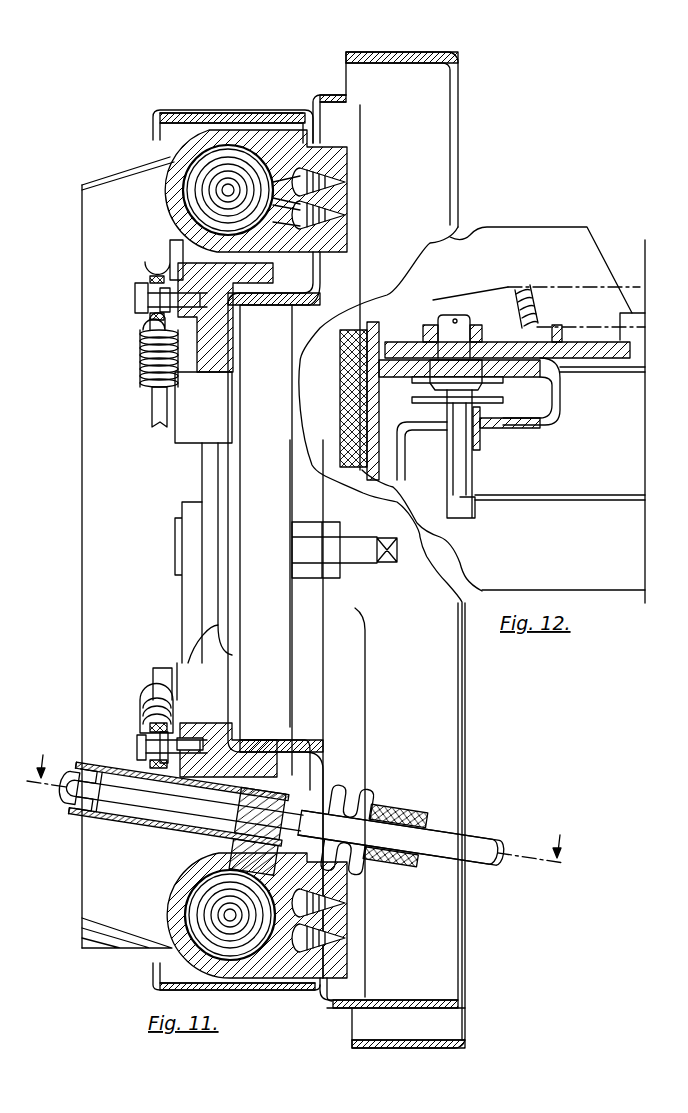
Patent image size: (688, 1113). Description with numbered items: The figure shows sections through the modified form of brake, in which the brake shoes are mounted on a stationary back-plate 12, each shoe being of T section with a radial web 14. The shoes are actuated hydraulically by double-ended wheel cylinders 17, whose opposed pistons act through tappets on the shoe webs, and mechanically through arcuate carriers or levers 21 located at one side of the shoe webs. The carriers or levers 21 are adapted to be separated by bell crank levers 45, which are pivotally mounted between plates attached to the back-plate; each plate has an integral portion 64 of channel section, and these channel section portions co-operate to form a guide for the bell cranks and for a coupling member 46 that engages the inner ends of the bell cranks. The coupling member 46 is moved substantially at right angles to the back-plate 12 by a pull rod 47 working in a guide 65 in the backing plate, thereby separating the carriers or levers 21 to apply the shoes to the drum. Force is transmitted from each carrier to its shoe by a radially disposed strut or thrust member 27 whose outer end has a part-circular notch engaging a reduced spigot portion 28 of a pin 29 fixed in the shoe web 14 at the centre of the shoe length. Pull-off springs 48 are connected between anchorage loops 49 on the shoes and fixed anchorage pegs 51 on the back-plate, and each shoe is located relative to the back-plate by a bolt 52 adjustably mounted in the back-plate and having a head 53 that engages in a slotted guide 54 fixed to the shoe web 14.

In FIG. 11, the back-plate 12 is at (432, 163).
In FIG. 11, the double-ended wheel cylinder 17 is at (225, 135).
In FIG. 11, the anchorage peg 51 is at (160, 300).
In FIG. 11, the pull-off spring 48 is at (140, 362).
In FIG. 12, the pull-off spring 48 is at (508, 292).
In FIG. 11, the radial web 14 is at (304, 793).
In FIG. 12, the radial web 14 is at (398, 368).
In FIG. 11, the coupling member 46 is at (80, 808).
In FIG. 11, the bell crank lever 45 is at (90, 822).
In FIG. 11, the channel section portion 64 is at (147, 803).
In FIG. 11, the guide 65 is at (273, 802).
In FIG. 11, the pull rod 47 is at (438, 840).
In FIG. 12, the anchorage loop 49 is at (405, 308).
In FIG. 12, the reduced spigot portion 28 is at (450, 333).
In FIG. 12, the pin 29 is at (470, 374).
In FIG. 12, the strut or thrust member 27 is at (557, 358).
In FIG. 12, the arcuate carrier or lever 21 is at (607, 372).
In FIG. 12, the head 53 is at (523, 420).
In FIG. 12, the slotted guide 54 is at (423, 410).
In FIG. 12, the bolt 52 is at (472, 457).